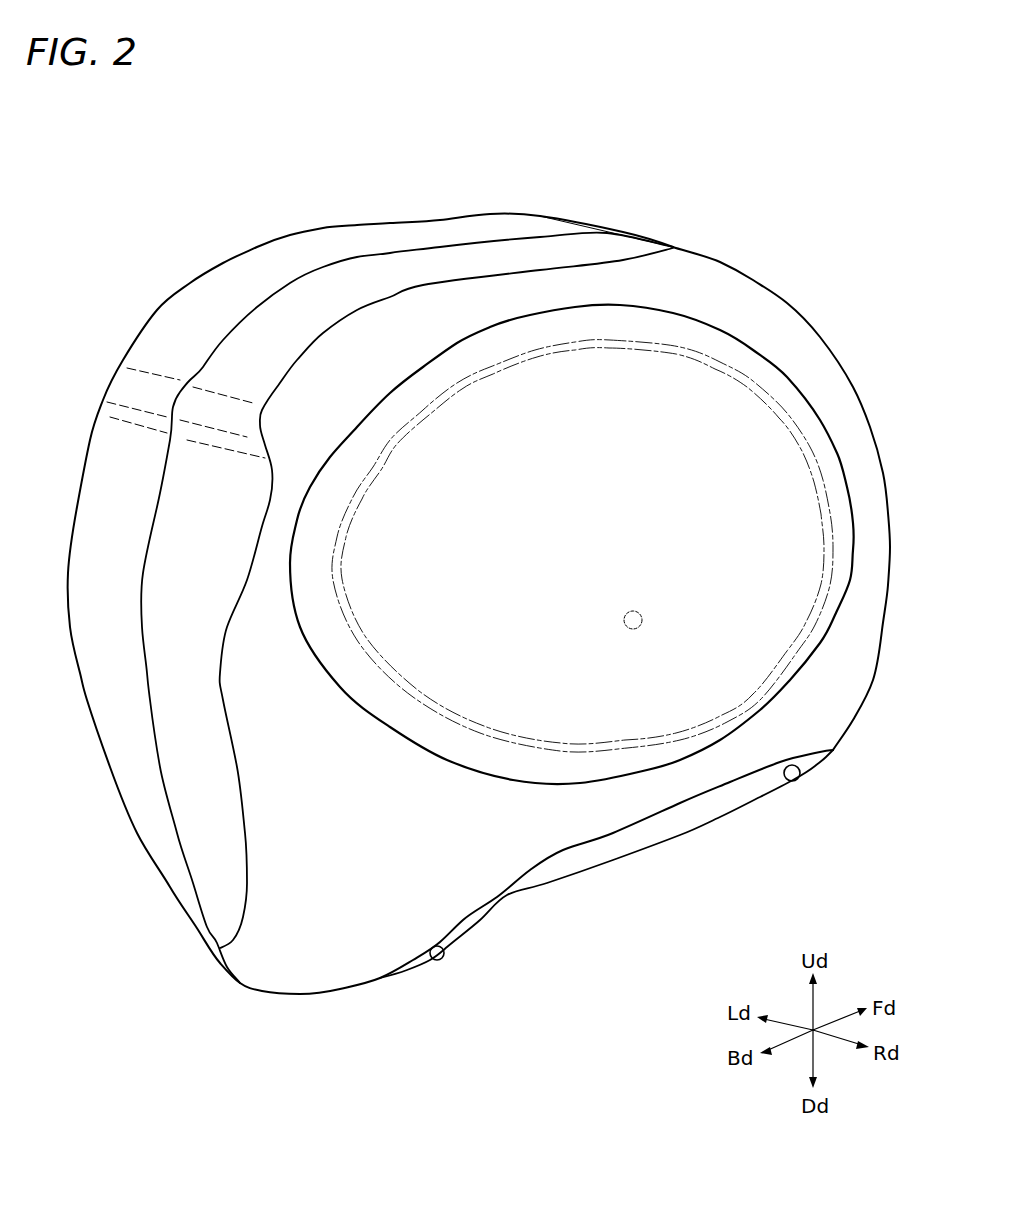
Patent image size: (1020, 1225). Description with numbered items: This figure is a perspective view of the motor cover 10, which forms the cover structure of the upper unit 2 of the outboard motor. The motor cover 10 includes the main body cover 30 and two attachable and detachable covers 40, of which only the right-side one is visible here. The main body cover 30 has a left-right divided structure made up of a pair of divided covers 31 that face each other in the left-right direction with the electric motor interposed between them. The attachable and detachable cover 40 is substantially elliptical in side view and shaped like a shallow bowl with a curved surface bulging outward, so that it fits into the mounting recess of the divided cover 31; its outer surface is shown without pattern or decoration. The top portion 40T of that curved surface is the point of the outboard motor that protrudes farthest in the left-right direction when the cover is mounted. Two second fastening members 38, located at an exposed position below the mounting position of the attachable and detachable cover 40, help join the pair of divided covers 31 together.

The upper unit 2 is at (258, 199).
The motor cover 10 is at (572, 448).
The main body cover 30 is at (572, 449).
The divided cover 31 is at (532, 228).
The attachable and detachable cover 40 is at (582, 453).
The top portion 40T is at (637, 630).
The second fastening member 38 is at (795, 783).